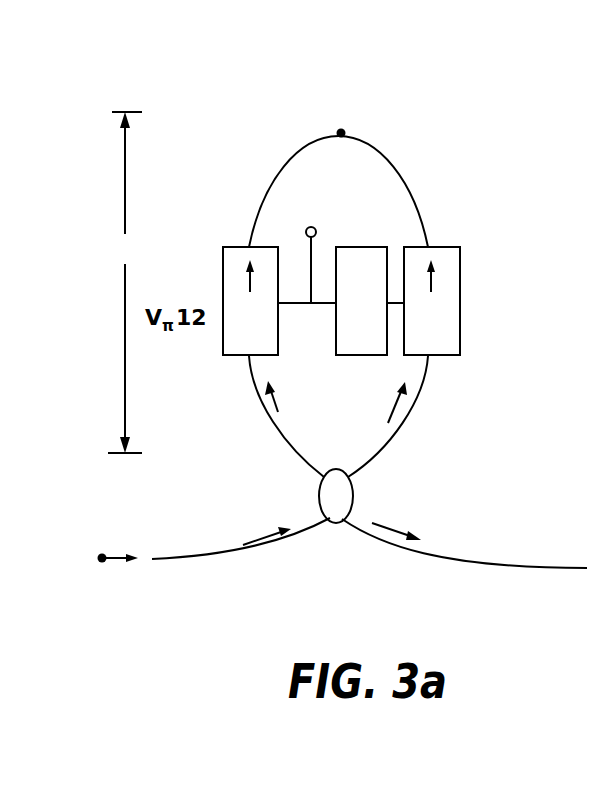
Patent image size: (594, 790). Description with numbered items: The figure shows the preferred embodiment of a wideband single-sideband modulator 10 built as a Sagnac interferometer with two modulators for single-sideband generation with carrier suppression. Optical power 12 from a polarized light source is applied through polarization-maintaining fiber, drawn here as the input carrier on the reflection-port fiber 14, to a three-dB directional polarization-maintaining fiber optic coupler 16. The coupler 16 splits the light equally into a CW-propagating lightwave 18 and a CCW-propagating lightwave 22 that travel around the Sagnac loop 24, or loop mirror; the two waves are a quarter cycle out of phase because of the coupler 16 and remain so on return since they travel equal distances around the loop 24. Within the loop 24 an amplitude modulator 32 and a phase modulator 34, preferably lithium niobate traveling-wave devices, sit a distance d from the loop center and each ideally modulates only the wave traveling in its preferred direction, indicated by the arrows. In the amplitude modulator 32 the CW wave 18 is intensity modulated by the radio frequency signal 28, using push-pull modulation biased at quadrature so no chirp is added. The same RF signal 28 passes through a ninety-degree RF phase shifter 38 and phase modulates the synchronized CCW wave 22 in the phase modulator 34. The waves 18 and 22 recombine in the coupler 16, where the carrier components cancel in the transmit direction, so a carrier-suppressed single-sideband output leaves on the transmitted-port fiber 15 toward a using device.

The wideband single-sideband modulator 10 is at (503, 116).
The optical power 12 is at (102, 563).
The reflection port fiber 14 is at (334, 522).
The transmitted port fiber 15 is at (340, 522).
The 3-dB directional polarization-maintaining fiber optic coupler 16 is at (319, 494).
The CW-propagating lightwave 18 is at (277, 400).
The CCW-propagating lightwave 22 is at (397, 408).
The Sagnac loop 24 is at (125, 282).
The radio frequency signal 28 is at (311, 258).
The amplitude modulator 32 is at (223, 357).
The phase modulator 34 is at (462, 270).
The 90° RF phase shifter 38 is at (362, 247).